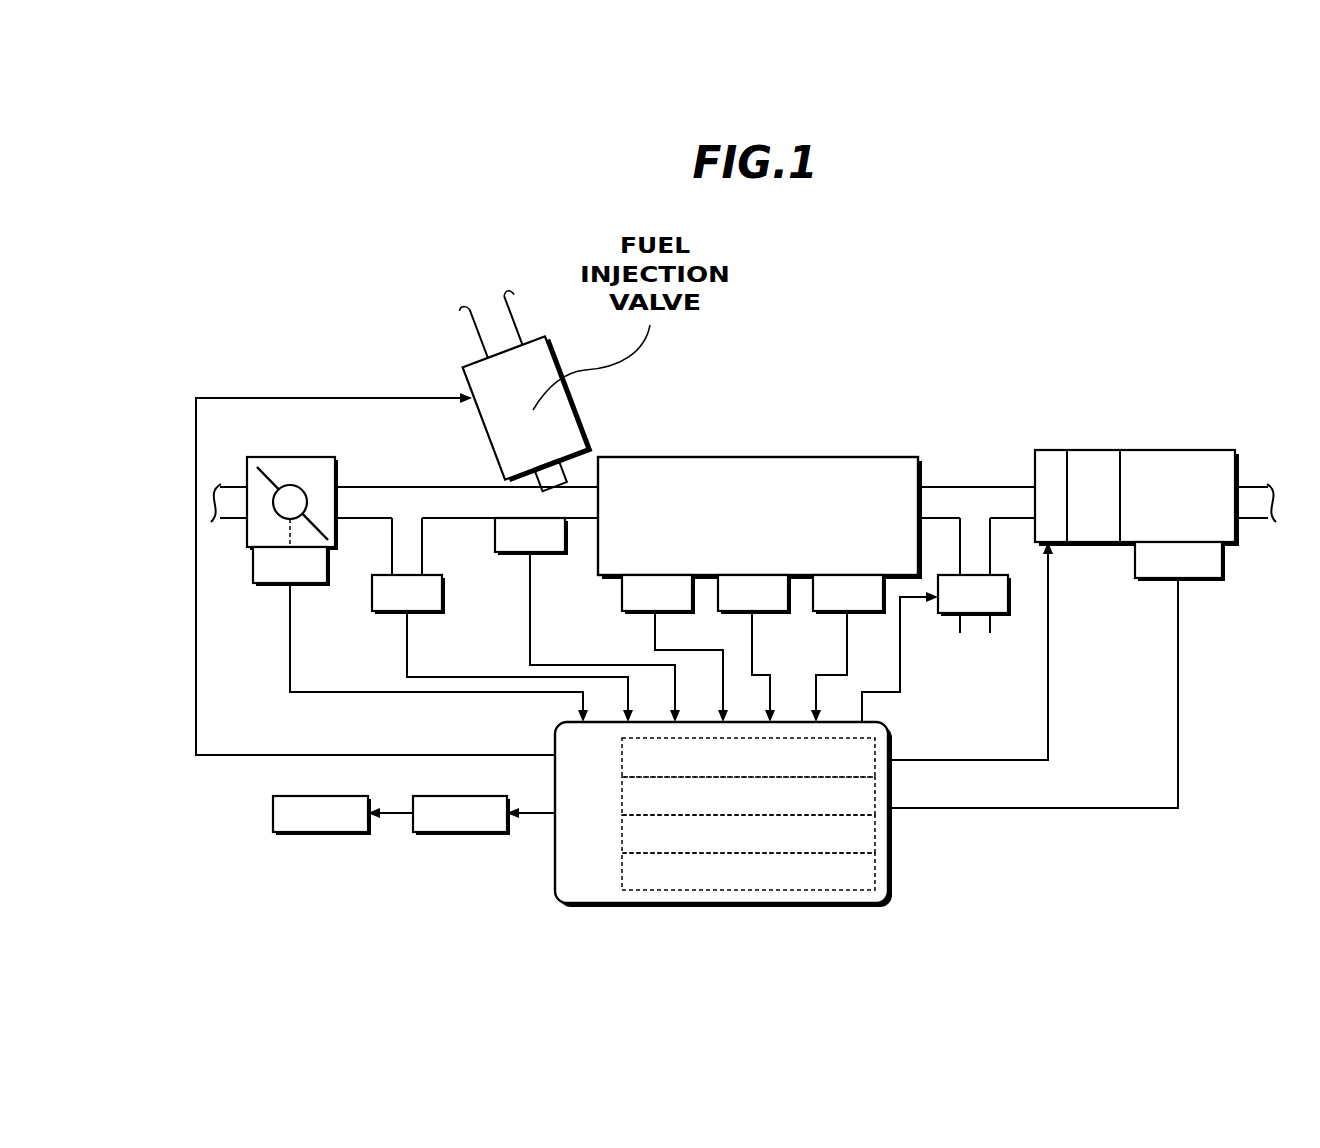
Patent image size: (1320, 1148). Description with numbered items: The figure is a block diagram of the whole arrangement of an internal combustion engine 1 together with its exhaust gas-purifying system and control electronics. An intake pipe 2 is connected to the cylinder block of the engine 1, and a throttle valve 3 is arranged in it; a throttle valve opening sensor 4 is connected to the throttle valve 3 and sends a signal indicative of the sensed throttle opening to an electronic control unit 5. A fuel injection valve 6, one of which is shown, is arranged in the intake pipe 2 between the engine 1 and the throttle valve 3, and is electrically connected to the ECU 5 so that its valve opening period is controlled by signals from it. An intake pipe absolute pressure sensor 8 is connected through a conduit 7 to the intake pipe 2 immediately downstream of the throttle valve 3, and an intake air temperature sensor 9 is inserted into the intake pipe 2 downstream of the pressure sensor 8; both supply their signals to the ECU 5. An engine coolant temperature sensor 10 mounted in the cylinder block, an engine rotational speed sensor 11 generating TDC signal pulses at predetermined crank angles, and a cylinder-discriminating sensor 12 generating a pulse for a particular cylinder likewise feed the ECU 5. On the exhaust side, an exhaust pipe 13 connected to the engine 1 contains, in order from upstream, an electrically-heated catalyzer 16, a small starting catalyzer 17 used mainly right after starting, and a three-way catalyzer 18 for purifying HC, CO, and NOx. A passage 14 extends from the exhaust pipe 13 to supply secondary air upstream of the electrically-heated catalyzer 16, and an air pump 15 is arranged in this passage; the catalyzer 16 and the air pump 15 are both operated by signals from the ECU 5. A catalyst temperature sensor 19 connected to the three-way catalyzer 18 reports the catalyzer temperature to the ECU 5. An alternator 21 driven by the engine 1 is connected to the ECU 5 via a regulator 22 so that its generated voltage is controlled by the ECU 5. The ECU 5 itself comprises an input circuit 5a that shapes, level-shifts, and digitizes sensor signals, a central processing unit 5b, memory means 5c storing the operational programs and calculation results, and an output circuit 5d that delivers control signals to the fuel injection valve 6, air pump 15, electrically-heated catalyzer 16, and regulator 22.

The internal combustion engine 1 is at (867, 457).
The intake pipe 2 is at (421, 486).
The throttle valve 3 is at (272, 473).
The throttle valve opening (θTH) sensor 4 is at (305, 585).
The electronic control unit (ECU) 5 is at (762, 789).
The input circuit 5a is at (870, 757).
The central processing unit (CPU) 5b is at (868, 788).
The memory means 5c is at (868, 829).
The output circuit 5d is at (868, 869).
The fuel injection valve 6 is at (470, 360).
The conduit 7 is at (424, 530).
The intake pipe absolute pressure (PBA) sensor 8 is at (425, 614).
The intake air temperature (TA) sensor 9 is at (545, 555).
The engine coolant temperature (TW) sensor 10 is at (640, 613).
The engine rotational speed (NE) sensor 11 is at (764, 613).
The cylinder-discriminating (CYL) sensor 12 is at (835, 613).
The exhaust pipe 13 is at (930, 487).
The passage 14 is at (995, 561).
The air pump 15 is at (948, 614).
The electrically-heated catalyzer (EHC) 16 is at (1048, 450).
The starting catalyzer 17 is at (1093, 450).
The three-way catalyzer 18 is at (1158, 450).
The catalyst temperature sensor 19 is at (1190, 580).
The alternator 21 is at (340, 834).
The regulator 22 is at (480, 834).